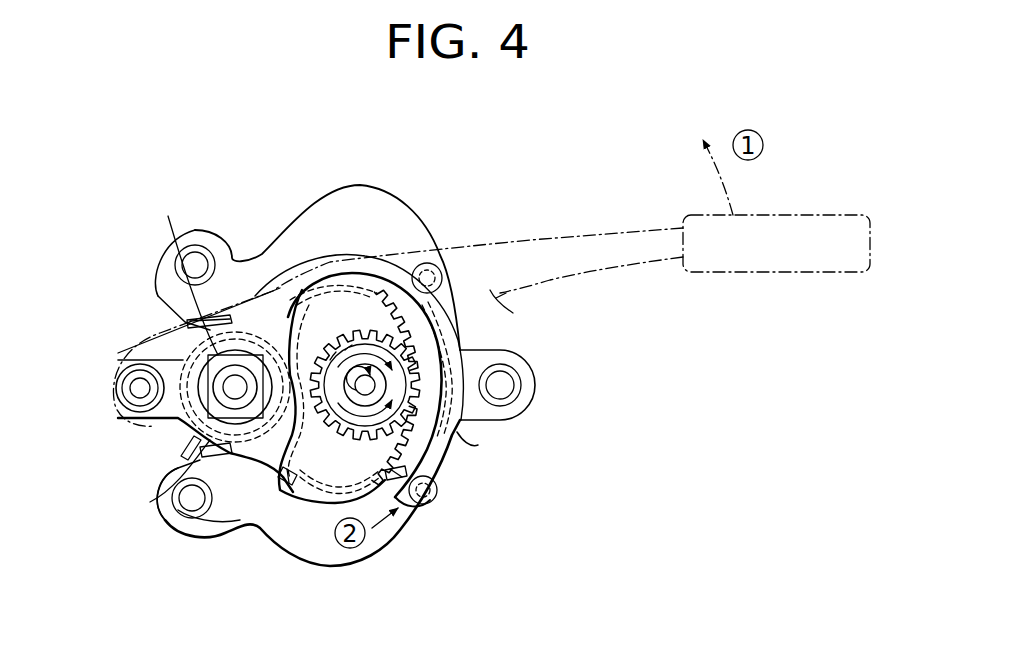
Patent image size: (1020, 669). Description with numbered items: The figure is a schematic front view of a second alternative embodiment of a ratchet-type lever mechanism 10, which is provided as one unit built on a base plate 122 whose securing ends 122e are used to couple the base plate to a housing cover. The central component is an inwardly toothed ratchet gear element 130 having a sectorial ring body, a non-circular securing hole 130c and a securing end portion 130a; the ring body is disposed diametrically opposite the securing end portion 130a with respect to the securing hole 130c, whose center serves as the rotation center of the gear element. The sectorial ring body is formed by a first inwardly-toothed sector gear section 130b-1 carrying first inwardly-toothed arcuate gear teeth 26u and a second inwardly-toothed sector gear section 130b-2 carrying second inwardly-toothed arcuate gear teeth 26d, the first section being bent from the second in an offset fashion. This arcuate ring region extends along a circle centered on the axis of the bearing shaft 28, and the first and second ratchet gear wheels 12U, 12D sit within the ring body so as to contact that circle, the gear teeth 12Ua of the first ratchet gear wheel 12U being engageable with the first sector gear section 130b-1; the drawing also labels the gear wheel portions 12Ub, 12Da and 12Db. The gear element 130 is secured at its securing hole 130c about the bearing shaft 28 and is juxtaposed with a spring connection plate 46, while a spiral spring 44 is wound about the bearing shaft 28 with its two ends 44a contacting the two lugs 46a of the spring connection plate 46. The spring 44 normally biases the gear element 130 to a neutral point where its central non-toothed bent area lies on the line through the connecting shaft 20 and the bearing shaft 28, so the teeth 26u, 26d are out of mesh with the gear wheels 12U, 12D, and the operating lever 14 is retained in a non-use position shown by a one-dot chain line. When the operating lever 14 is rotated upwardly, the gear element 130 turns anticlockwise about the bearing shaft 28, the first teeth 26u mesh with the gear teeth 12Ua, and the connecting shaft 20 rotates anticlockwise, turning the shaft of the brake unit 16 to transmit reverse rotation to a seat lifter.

The mechanism 10 is at (447, 172).
The second ratchet gear wheel 12D is at (366, 320).
The lower gear rotation direction 12Da is at (346, 353).
The lower gear rotation direction 12Db is at (334, 350).
The first ratchet gear wheel 12U is at (322, 440).
The gear teeth 12Ua is at (410, 492).
The upper gear engagement portion 12Ub is at (400, 474).
The operating lever 14 is at (610, 240).
The brake unit 16 is at (465, 358).
The connecting shaft 20 is at (460, 422).
The second inwardly-toothed arcuate gear teeth 26d is at (383, 290).
The first inwardly-toothed arcuate gear teeth 26u is at (424, 432).
The bearing shaft 28 is at (217, 362).
The spiral spring 44 is at (245, 300).
The ends of spiral spring 44a is at (188, 320).
The spring connection plate 46 is at (240, 445).
The lugs of spring connection plate 46a is at (157, 354).
The base plate 122 is at (275, 235).
The securing ends of base plate 122e is at (198, 232).
The inwardly toothed ratchet gear element 130 is at (266, 505).
The securing end portion 130a is at (121, 398).
The first inwardly-toothed sector gear section 130b-1 is at (427, 452).
The second inwardly-toothed sector gear section 130b-2 is at (418, 295).
The non-circular securing hole 130c is at (185, 506).